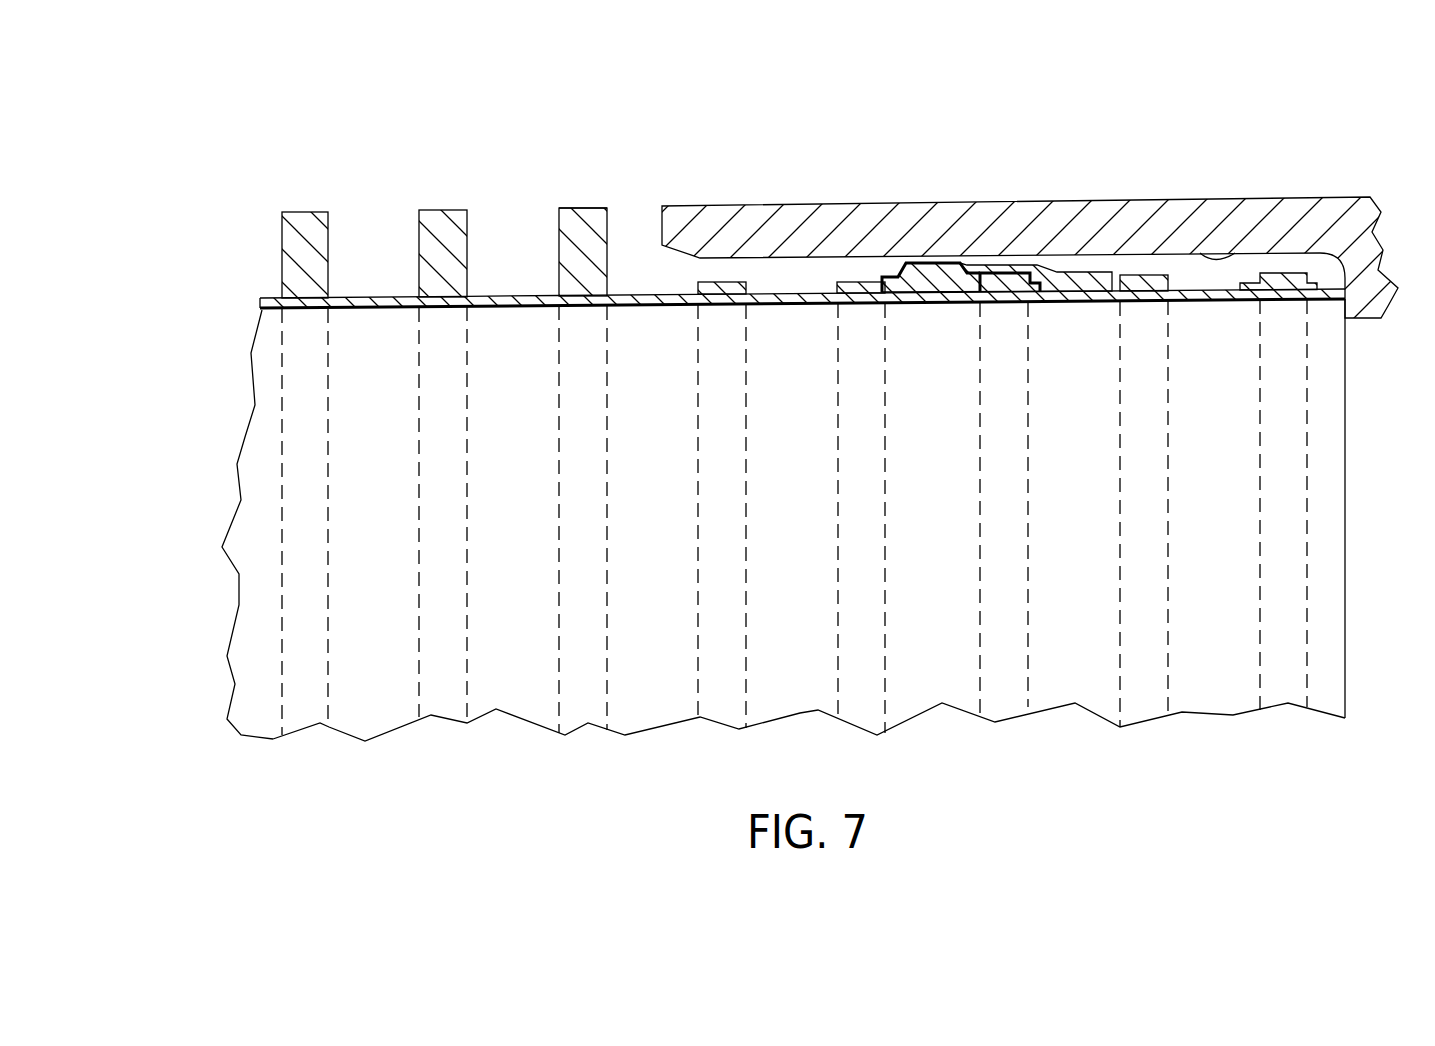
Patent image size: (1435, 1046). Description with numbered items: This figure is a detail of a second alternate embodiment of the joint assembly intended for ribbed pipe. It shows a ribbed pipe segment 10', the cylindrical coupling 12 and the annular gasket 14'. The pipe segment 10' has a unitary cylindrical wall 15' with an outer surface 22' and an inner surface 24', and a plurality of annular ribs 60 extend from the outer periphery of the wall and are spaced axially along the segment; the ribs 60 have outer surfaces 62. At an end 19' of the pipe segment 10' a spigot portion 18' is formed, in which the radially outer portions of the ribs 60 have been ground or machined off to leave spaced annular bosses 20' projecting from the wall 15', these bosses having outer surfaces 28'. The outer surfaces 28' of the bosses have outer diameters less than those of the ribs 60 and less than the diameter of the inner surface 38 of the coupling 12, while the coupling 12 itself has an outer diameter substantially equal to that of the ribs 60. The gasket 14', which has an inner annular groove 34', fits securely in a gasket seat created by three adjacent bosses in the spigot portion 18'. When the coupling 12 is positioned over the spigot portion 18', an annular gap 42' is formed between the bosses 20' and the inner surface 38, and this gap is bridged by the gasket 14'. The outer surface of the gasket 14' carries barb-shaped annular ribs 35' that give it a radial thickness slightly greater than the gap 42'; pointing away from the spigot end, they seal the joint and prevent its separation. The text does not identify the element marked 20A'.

The ribbed pipe segment 10' is at (188, 495).
The cylindrical coupling 12 is at (1366, 189).
The annular gasket 14' is at (997, 332).
The unitary cylindrical wall 15' is at (802, 240).
The spigot portion 18' is at (809, 520).
The end 19' is at (1371, 508).
The annular bosses 20' is at (1007, 249).
The contact pad 20A' is at (1013, 218).
The outer surface 22' is at (513, 262).
The inner surface 24' is at (802, 326).
The outer surfaces of annular bosses 28' is at (639, 276).
The inner annular groove 34' is at (997, 313).
The barb-shaped annular ribs 35' is at (920, 225).
The inner surface of cylindrical coupling 38 is at (1227, 260).
The annular gap 42' is at (957, 256).
The annular ribs 60 is at (312, 212).
The outer surfaces of ribs 62 is at (588, 208).